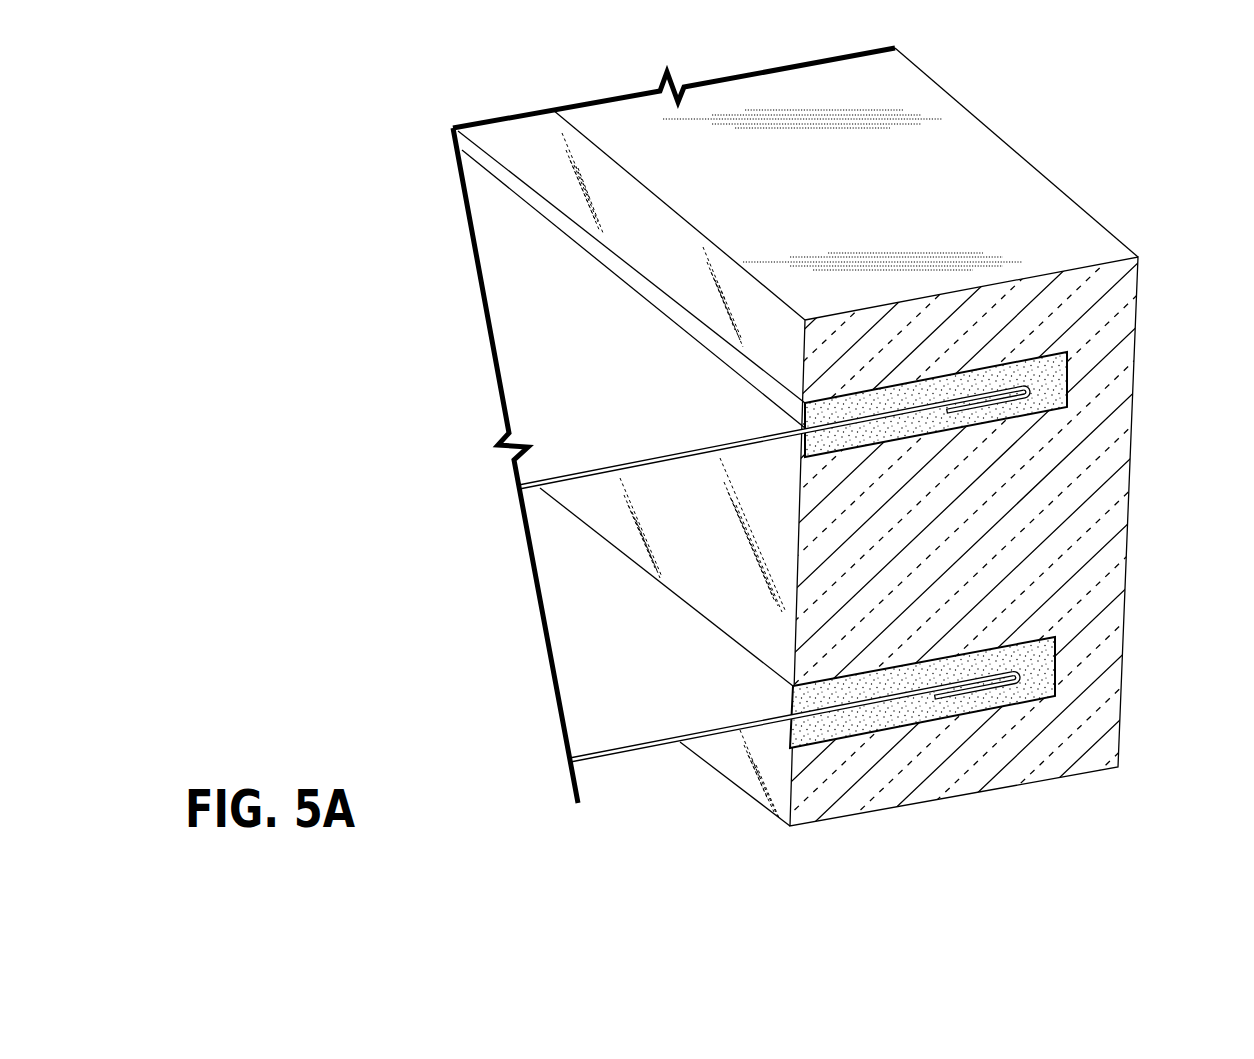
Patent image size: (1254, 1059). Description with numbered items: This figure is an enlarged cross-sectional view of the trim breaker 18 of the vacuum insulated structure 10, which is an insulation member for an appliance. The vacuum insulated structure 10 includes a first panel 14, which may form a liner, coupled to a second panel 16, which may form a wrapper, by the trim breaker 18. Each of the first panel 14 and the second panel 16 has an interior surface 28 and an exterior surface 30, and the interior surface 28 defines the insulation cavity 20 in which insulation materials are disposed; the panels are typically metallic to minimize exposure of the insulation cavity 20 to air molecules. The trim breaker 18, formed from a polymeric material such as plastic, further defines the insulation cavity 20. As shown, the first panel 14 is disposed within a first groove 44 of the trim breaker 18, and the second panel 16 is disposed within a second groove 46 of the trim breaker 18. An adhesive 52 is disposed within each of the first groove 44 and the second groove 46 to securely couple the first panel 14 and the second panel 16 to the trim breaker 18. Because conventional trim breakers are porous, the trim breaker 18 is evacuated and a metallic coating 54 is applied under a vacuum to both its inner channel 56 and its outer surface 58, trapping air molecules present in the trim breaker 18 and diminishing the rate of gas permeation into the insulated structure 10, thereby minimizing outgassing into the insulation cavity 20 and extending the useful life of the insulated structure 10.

The vacuum insulated structure 10 is at (392, 248).
The first panel 14 is at (605, 757).
The second panel 16 is at (537, 333).
The trim breaker 18 is at (949, 208).
The insulation cavity 20 is at (625, 543).
The interior surface 28 is at (662, 462).
The exterior surface 30 is at (495, 220).
The first groove 44 is at (1058, 672).
The second groove 46 is at (1067, 387).
The adhesive 52 is at (988, 375).
The metallic coating 54 is at (872, 110).
The inner channel 56 is at (725, 588).
The outer surface 58 is at (962, 128).